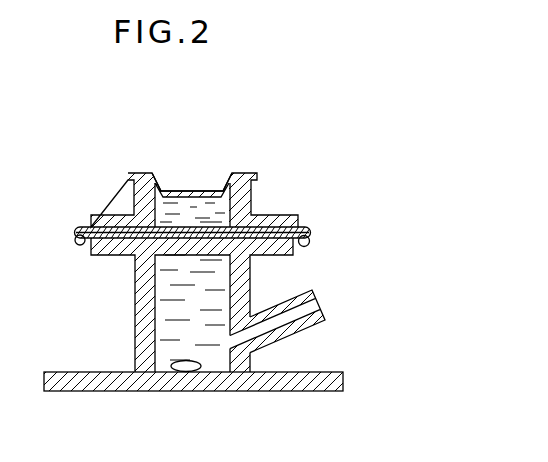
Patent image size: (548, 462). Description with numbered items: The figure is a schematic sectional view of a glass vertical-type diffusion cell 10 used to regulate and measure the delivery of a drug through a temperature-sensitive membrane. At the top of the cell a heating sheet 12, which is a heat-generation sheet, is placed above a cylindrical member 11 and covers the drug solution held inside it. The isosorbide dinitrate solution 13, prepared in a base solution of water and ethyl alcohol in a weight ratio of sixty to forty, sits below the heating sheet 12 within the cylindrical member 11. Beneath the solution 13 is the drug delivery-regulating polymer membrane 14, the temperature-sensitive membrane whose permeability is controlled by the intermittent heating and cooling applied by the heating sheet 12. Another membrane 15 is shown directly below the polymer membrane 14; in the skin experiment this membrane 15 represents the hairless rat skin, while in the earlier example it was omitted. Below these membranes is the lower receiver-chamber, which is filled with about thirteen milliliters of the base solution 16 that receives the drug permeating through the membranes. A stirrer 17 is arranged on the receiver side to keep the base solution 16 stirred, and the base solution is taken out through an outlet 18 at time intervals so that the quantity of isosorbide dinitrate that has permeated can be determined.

The diffusion cell 10 is at (412, 238).
The cylindrical member 11 is at (251, 215).
The heating sheet 12 is at (204, 189).
The isosorbide dinitrate solution 13 is at (182, 205).
The drug delivery-regulating polymer membrane 14 is at (301, 230).
The membrane 15 is at (309, 245).
The base solution 16 is at (165, 299).
The stirrer 17 is at (193, 373).
The outlet 18 is at (323, 311).